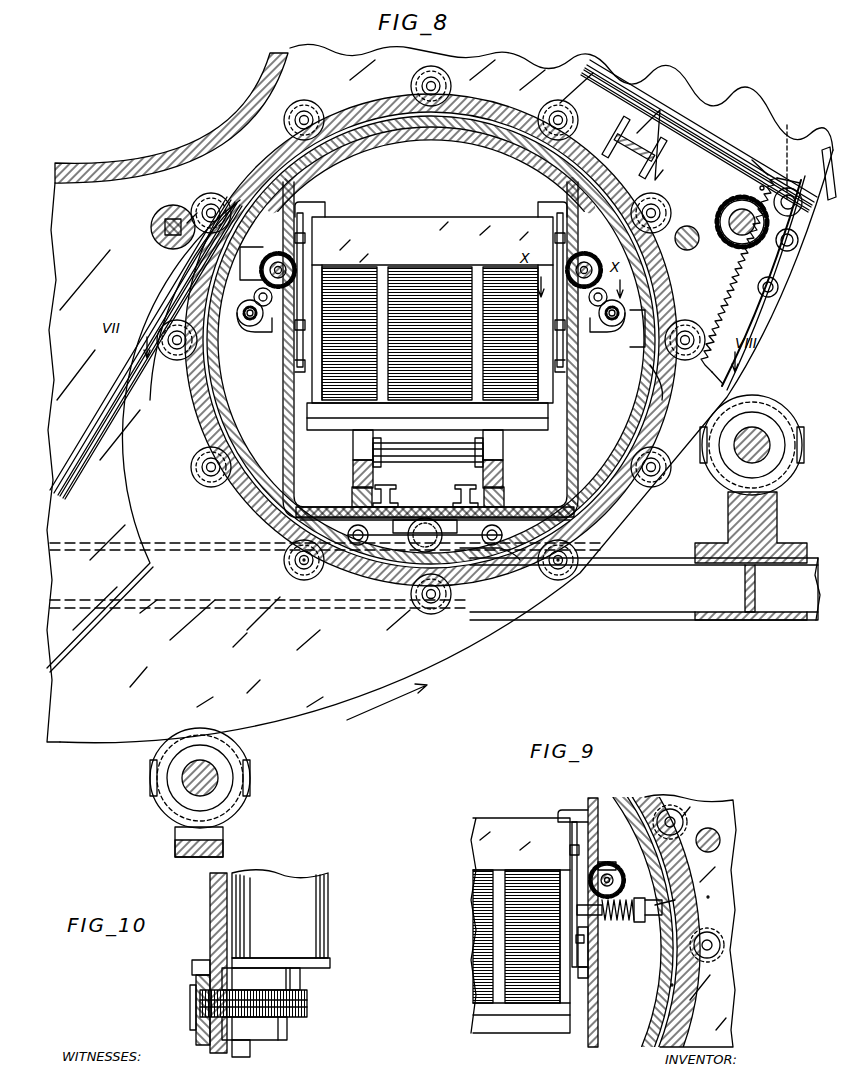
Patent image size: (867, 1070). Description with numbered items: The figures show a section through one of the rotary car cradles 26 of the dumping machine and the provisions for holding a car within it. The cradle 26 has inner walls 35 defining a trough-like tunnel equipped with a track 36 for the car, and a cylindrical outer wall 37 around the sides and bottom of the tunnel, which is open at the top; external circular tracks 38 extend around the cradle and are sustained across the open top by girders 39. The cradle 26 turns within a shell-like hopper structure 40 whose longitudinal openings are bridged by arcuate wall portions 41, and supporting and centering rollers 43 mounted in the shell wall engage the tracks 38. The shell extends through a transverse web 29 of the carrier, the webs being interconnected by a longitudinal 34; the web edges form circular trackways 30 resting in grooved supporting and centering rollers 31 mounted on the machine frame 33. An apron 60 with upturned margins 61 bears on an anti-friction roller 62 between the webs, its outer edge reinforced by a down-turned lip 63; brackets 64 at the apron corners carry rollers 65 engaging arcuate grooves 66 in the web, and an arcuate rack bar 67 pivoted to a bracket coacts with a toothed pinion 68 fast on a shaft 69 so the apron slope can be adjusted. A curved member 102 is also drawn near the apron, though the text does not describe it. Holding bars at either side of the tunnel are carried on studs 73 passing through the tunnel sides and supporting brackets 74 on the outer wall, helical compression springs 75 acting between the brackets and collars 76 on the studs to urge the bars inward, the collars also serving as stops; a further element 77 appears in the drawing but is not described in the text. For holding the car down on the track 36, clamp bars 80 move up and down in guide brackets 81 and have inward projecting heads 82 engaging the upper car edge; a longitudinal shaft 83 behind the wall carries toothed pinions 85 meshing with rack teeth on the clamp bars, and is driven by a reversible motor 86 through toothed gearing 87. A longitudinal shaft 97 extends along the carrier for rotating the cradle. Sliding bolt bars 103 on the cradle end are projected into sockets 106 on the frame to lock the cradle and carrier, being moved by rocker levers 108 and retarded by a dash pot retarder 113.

In FIG. 8, the car cradle 26 is at (660, 395).
In FIG. 9, the car cradle 26 is at (672, 985).
In FIG. 8, the transverse web 29 is at (440, 393).
In FIG. 9, the transverse web 29 is at (718, 807).
In FIG. 8, the circular trackway 30 is at (470, 640).
In FIG. 8, the supporting and centering roller 31 is at (782, 400).
In FIG. 8, the machine frame 33 is at (650, 621).
In FIG. 8, the longitudinal 34 is at (628, 125).
In FIG. 8, the inner wall 35 is at (283, 402).
In FIG. 9, the inner wall 35 is at (598, 1009).
In FIG. 10, the inner wall 35 is at (210, 898).
In FIG. 8, the track 36 is at (460, 486).
In FIG. 8, the cylindrical outer wall 37 is at (243, 500).
In FIG. 9, the cylindrical outer wall 37 is at (685, 1012).
In FIG. 8, the external circular track 38 is at (262, 516).
In FIG. 9, the external circular track 38 is at (700, 968).
In FIG. 8, the girder 39 is at (434, 142).
In FIG. 8, the shell-like hopper structure 40 is at (480, 560).
In FIG. 9, the shell-like hopper structure 40 is at (708, 897).
In FIG. 8, the arcuate wall portion 41 is at (482, 608).
In FIG. 8, the supporting and centering roller 43 is at (455, 82).
In FIG. 9, the supporting and centering roller 43 is at (672, 808).
In FIG. 8, the apron 60 is at (110, 390).
In FIG. 8, the upturned margin 61 is at (133, 498).
In FIG. 8, the anti-friction roller 62 is at (151, 224).
In FIG. 8, the down-turned lip 63 is at (822, 160).
In FIG. 8, the bracket 64 is at (775, 200).
In FIG. 8, the roller 65 is at (775, 258).
In FIG. 8, the arcuate groove 66 is at (760, 170).
In FIG. 8, the arcuate rack bar 67 is at (765, 305).
In FIG. 8, the toothed pinion 68 is at (735, 215).
In FIG. 8, the shaft 69 is at (735, 200).
In FIG. 9, the stud 73 is at (642, 922).
In FIG. 8, the supporting bracket 74 is at (240, 330).
In FIG. 9, the supporting bracket 74 is at (670, 900).
In FIG. 9, the helical compression spring 75 is at (620, 922).
In FIG. 9, the collar 76 is at (604, 918).
In FIG. 8, the transformer 77 is at (550, 296).
In FIG. 9, the transformer 77 is at (490, 835).
In FIG. 8, the clamp bar 80 is at (296, 372).
In FIG. 9, the clamp bar 80 is at (590, 978).
In FIG. 10, the clamp bar 80 is at (190, 997).
In FIG. 8, the guide bracket 81 is at (304, 240).
In FIG. 9, the guide bracket 81 is at (572, 845).
In FIG. 10, the guide bracket 81 is at (200, 962).
In FIG. 8, the inward projecting head 82 is at (315, 203).
In FIG. 9, the inward projecting head 82 is at (568, 809).
In FIG. 8, the longitudinal shaft 83 is at (277, 262).
In FIG. 9, the longitudinal shaft 83 is at (608, 872).
In FIG. 10, the longitudinal shaft 83 is at (252, 1050).
In FIG. 8, the toothed pinion 85 is at (268, 255).
In FIG. 9, the toothed pinion 85 is at (624, 880).
In FIG. 10, the toothed pinion 85 is at (240, 1000).
In FIG. 8, the motor 86 is at (255, 327).
In FIG. 10, the motor 86 is at (330, 913).
In FIG. 8, the toothed gearing 87 is at (250, 300).
In FIG. 10, the toothed gearing 87 is at (308, 1000).
In FIG. 8, the longitudinal shaft 97 is at (762, 188).
In FIG. 9, the longitudinal shaft 97 is at (722, 836).
In FIG. 8, the shield 102 is at (185, 160).
In FIG. 8, the sliding bolt bar 103 is at (360, 522).
In FIG. 8, the socket 106 is at (282, 562).
In FIG. 8, the actuating rocker lever 108 is at (358, 500).
In FIG. 8, the retarder 113 is at (425, 516).